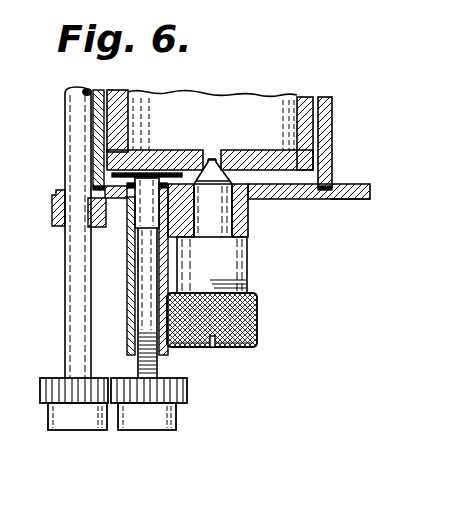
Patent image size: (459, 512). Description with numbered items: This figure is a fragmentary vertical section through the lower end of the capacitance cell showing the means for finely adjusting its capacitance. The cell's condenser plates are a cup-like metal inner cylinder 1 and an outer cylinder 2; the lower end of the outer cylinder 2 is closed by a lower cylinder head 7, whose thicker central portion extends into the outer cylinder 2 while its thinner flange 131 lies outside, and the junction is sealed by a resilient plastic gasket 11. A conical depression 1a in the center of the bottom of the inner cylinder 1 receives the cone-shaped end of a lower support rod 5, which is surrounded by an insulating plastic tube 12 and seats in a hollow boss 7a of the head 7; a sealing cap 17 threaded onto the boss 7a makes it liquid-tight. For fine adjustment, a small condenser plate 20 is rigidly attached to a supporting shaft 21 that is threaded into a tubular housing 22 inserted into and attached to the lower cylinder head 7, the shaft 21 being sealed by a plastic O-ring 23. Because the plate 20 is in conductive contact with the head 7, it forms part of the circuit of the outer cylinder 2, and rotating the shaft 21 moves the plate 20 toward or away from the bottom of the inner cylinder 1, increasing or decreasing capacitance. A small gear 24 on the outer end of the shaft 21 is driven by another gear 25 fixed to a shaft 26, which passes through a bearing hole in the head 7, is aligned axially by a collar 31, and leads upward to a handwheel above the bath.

The inner cylinder 1 is at (250, 97).
The conical shaped depression 1a is at (210, 160).
The outer cylinder 2 is at (332, 128).
The support rod 5 is at (228, 166).
The lower cylinder head 7 is at (298, 199).
The hollow boss 7a is at (247, 262).
The gasket 11 is at (333, 188).
The plastic tube 12 is at (232, 213).
The sealing cap 17 is at (257, 318).
The condenser plate 20 is at (163, 176).
The supporting shaft 21 is at (138, 364).
The tubular housing 22 is at (128, 313).
The O-ring 23 is at (119, 215).
The small gear 24 is at (188, 392).
The gear 25 is at (40, 397).
The shaft 26 is at (65, 350).
The collar 31 is at (60, 227).
The flange 131 is at (343, 201).